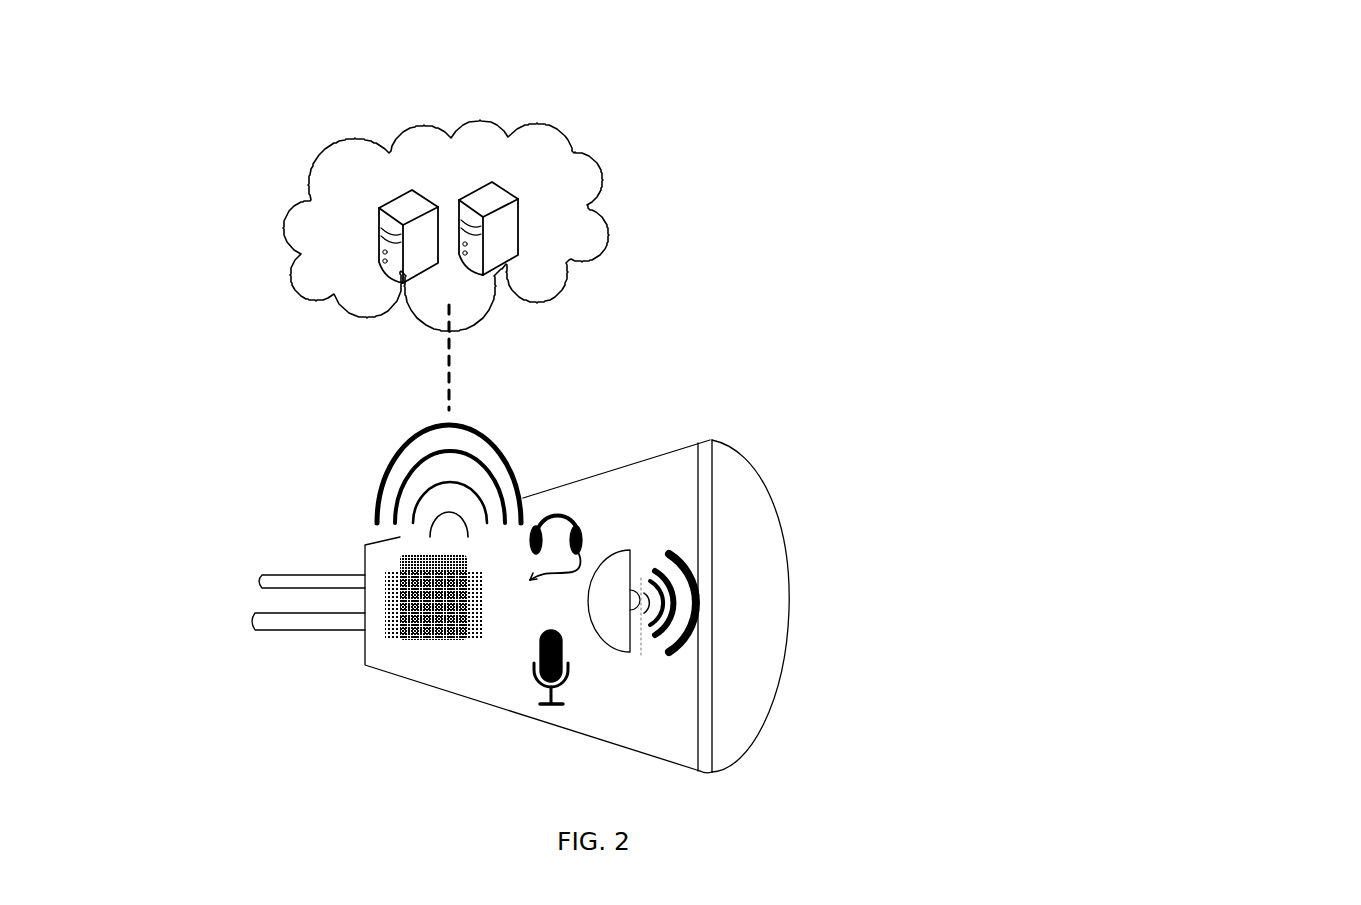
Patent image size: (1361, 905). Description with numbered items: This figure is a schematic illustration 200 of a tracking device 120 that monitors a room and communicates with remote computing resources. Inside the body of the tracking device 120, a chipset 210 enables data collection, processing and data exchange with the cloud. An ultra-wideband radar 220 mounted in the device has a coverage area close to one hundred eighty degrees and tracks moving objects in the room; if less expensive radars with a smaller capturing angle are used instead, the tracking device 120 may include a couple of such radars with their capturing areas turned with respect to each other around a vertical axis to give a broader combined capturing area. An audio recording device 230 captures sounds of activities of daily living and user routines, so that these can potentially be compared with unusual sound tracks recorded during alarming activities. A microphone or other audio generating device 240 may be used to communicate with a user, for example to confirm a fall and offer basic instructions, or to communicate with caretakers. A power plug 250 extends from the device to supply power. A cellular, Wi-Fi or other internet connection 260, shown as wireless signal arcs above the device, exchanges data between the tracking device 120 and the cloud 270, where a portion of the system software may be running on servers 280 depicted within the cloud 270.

The schematic illustration 200 is at (1330, 115).
The tracking device 120 is at (641, 458).
The chipset 210 is at (420, 640).
The ultra-wideband radar 220 is at (623, 653).
The audio recording device 230 is at (542, 510).
The microphone or other audio generating device 240 is at (537, 665).
The power plug 250 is at (277, 633).
The cellular, Wi-Fi or other internet connection 260 is at (395, 452).
The cloud 270 is at (327, 293).
The servers 280 is at (540, 233).